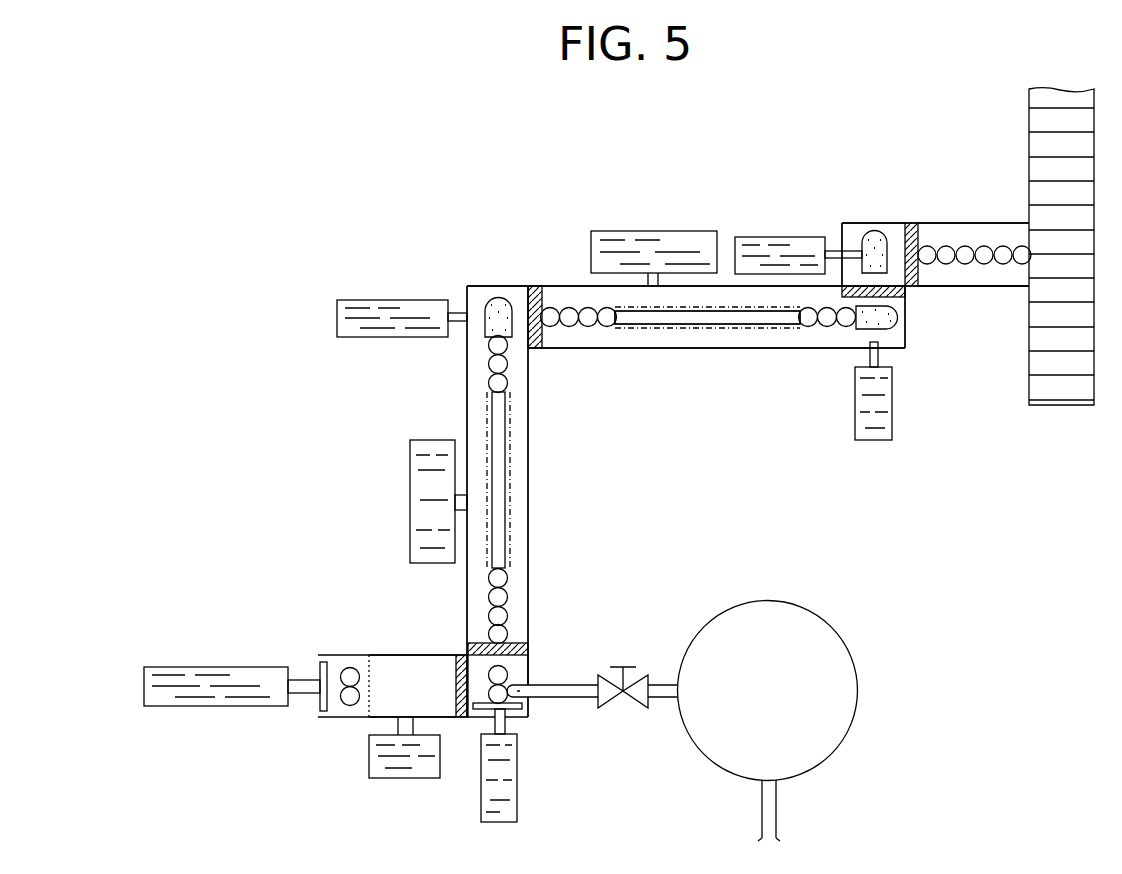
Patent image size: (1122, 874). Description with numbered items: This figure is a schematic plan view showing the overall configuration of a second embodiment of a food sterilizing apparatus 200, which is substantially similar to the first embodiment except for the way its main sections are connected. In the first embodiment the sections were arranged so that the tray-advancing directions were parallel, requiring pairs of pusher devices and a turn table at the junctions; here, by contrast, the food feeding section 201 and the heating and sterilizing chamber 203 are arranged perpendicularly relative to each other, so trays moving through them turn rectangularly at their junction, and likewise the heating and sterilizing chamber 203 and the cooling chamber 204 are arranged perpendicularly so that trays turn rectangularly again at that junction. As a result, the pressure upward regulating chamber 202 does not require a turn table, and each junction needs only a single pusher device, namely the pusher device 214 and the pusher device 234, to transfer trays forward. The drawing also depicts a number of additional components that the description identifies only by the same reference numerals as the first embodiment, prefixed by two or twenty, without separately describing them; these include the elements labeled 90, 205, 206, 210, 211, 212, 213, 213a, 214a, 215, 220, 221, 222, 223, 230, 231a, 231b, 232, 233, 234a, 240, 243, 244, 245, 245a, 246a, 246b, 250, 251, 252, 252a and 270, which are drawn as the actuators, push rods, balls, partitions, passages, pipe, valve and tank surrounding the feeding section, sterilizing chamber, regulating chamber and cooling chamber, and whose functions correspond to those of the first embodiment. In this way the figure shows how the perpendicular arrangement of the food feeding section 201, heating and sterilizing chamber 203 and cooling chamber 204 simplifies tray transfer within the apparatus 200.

The ball 90 is at (347, 668).
The food sterilizing apparatus 200 is at (488, 198).
The food feeding section 201 is at (384, 650).
The pressure upward regulating chamber 202 is at (523, 672).
The heating and sterilizing chamber 203 is at (534, 536).
The cooling chamber 204 is at (646, 356).
The upper chamber partition 205 is at (893, 228).
The outlet passage 206 is at (950, 292).
The partition wall 210 is at (456, 700).
The boundary line 211 is at (355, 718).
The chamber portion 212 is at (433, 690).
The actuator 213 is at (290, 665).
The push rod 213a is at (300, 692).
The pusher device 214 is at (516, 777).
The push rod 214a is at (508, 723).
The actuator 215 is at (393, 780).
The partition 220 is at (510, 642).
The pipe 221 is at (548, 695).
The valve 222 is at (635, 698).
The tank 223 is at (825, 740).
The partition 230 is at (548, 332).
The rod 231a is at (508, 440).
The rod guide 231b is at (488, 423).
The actuator 232 is at (412, 495).
The piston 233 is at (490, 292).
The pusher device 234 is at (395, 303).
The push rod 234a is at (456, 322).
The partition 240 is at (907, 298).
The actuator 243 is at (640, 240).
The piston 244 is at (900, 320).
The actuator 245 is at (893, 405).
The push rod 245a is at (866, 353).
The rod 246a is at (632, 307).
The rod 246b is at (691, 327).
The ball passage 250 is at (921, 240).
The piston 251 is at (865, 232).
The actuator 252 is at (783, 240).
The push rod 252a is at (835, 252).
The wall 270 is at (1026, 124).